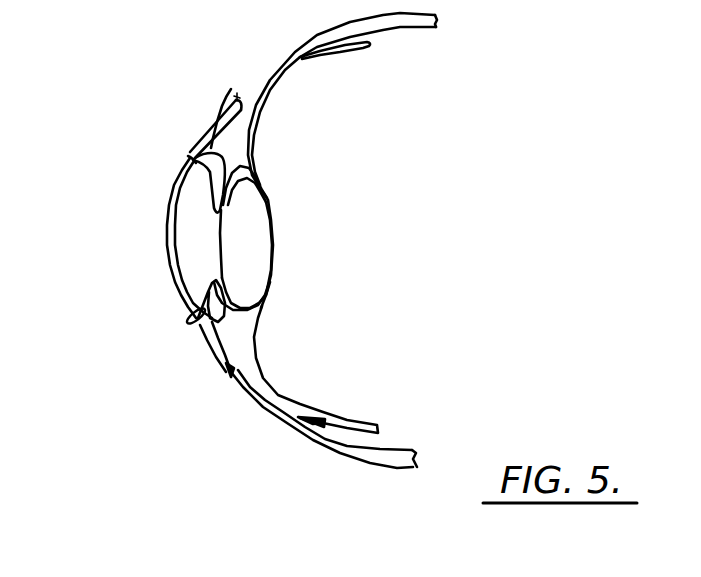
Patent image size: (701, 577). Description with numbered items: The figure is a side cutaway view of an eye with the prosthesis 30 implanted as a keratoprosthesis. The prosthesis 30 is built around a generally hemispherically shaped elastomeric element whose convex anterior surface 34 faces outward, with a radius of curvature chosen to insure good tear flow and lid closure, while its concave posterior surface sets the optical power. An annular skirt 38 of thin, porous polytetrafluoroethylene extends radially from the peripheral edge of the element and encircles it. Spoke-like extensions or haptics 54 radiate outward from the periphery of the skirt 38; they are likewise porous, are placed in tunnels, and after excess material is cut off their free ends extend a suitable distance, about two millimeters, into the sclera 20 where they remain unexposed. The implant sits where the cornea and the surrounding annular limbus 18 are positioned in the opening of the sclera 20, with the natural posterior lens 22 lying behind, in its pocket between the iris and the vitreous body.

The limbus 18 is at (192, 154).
The sclera 20 is at (238, 337).
The posterior lens 22 is at (252, 234).
The prosthesis 30 is at (206, 251).
The convex anterior surface 34 is at (168, 207).
The annular skirt 38 is at (193, 157).
The spoke-like extensions or haptics 54 is at (186, 318).